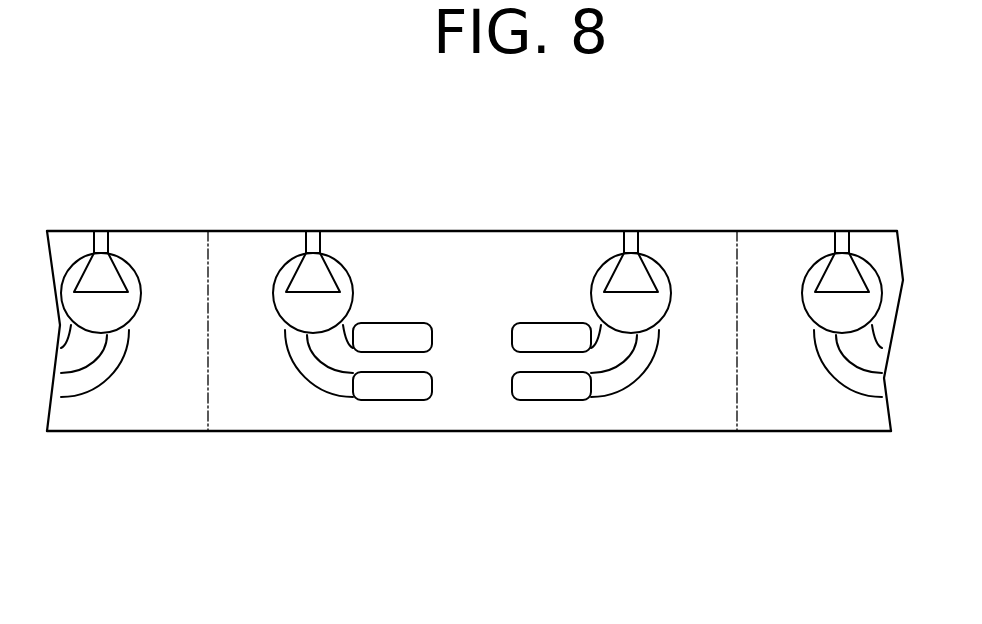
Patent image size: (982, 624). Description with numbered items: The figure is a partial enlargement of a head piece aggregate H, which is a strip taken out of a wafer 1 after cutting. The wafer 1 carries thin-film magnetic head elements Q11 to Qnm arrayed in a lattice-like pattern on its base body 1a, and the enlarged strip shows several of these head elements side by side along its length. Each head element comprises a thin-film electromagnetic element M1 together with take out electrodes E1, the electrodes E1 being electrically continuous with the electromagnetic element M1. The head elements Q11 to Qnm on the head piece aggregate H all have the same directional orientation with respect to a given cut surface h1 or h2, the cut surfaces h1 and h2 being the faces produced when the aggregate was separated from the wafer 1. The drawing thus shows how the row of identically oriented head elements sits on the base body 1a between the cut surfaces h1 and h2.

The wafer 1 is at (475, 364).
The base body 1a is at (755, 250).
The head piece aggregate H is at (123, 461).
The cut surface h1 is at (321, 444).
The cut surface h2 is at (215, 219).
The thin-film electromagnetic element M1 is at (294, 262).
The take out electrodes E1 is at (405, 382).
The thin-film magnetic head element Q11 is at (483, 267).